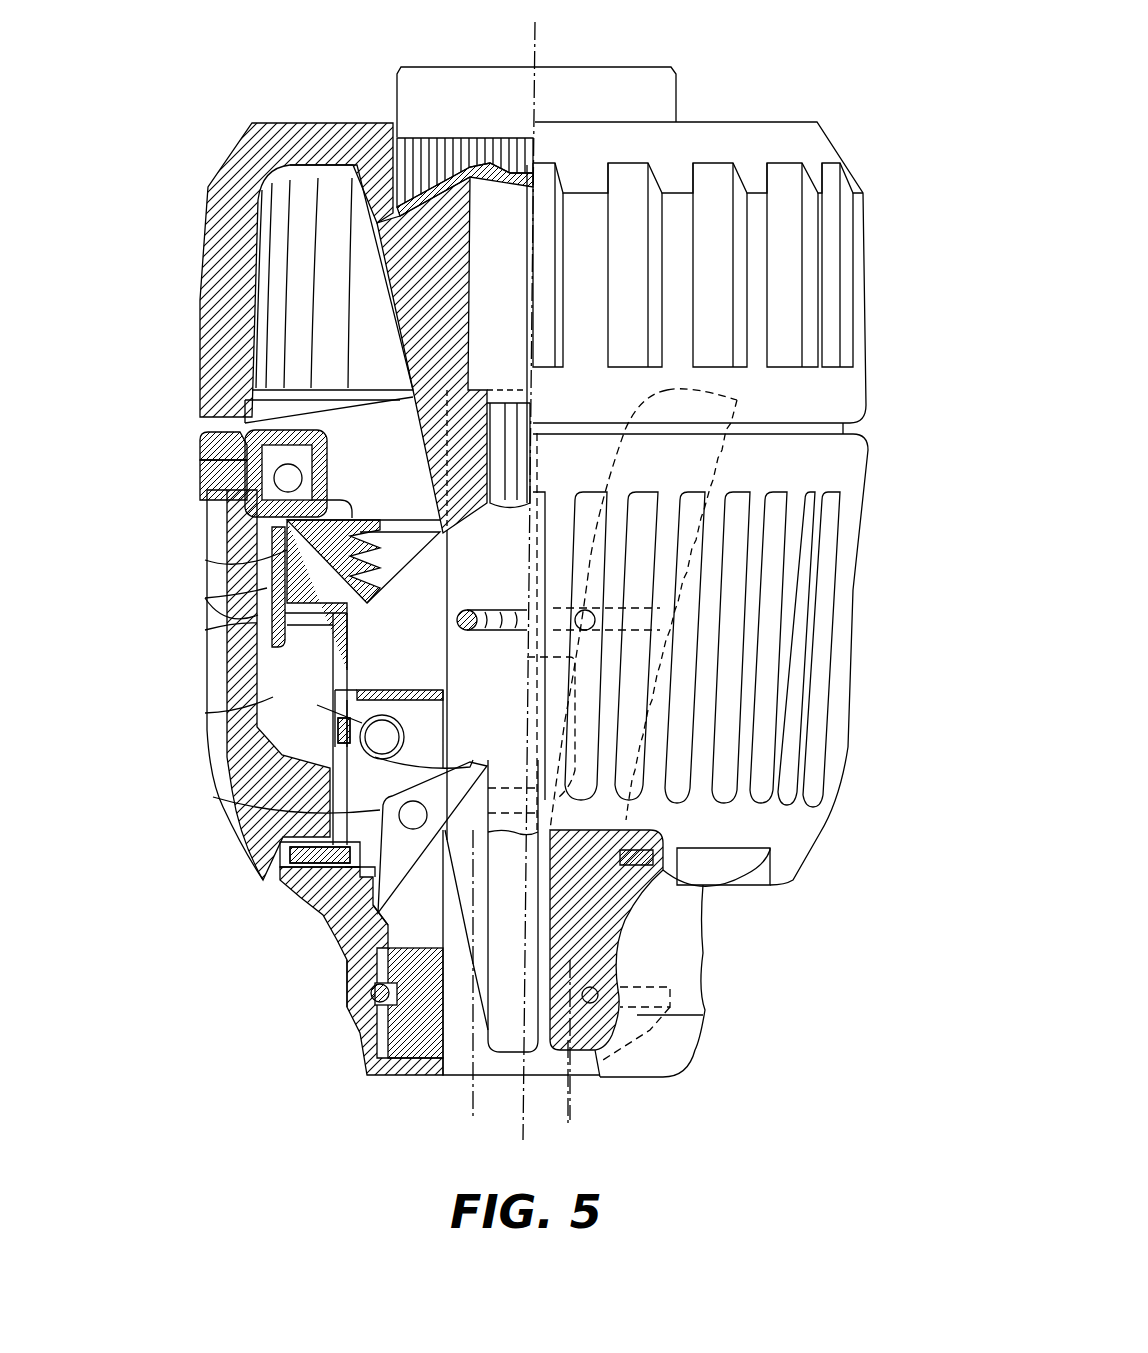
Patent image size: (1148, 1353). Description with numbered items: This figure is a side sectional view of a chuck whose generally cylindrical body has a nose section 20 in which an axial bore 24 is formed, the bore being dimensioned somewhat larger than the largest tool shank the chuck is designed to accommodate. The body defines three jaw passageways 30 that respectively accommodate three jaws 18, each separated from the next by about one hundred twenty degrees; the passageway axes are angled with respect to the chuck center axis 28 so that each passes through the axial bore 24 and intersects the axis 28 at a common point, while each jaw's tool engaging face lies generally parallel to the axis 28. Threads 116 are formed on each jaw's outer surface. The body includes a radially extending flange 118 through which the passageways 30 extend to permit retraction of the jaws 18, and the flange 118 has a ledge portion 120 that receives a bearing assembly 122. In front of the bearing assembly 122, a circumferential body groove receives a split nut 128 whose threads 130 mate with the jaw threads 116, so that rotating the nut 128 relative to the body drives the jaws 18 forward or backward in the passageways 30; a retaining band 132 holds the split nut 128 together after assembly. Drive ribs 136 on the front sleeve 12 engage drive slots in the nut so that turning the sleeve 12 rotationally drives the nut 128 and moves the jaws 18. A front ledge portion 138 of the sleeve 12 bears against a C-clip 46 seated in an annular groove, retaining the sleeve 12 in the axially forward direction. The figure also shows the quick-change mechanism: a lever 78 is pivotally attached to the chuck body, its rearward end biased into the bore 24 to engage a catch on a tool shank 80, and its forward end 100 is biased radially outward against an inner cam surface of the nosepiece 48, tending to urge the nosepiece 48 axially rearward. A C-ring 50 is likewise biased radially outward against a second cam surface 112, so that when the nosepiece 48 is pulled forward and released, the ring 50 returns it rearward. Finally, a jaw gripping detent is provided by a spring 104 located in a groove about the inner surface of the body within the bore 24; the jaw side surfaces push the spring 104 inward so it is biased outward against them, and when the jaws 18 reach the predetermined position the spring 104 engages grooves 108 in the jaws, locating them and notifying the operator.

The front sleeve 12 is at (853, 572).
The jaws 18 is at (707, 397).
The nose section 20 is at (377, 1025).
The axial bore 24 is at (457, 1020).
The chuck center axis 28 is at (538, 40).
The jaw passageways 30 is at (235, 425).
The C-clip 46 is at (320, 873).
The nosepiece 48 is at (708, 953).
The C-ring 50 is at (347, 1003).
The lever 78 is at (280, 843).
The shank 80 is at (568, 1110).
The forward end 100 is at (373, 920).
The spring 104 is at (480, 595).
The grooves 108 is at (447, 648).
The second cam surface 112 is at (377, 977).
The threads 116 is at (720, 466).
The flange 118 is at (230, 442).
The ledge portion 120 is at (318, 460).
The bearing assembly 122 is at (235, 487).
The split nut 128 is at (265, 590).
The threads 130 is at (287, 545).
The retaining band 132 is at (270, 625).
The drive ribs 136 is at (268, 697).
The front ledge portion 138 is at (213, 797).